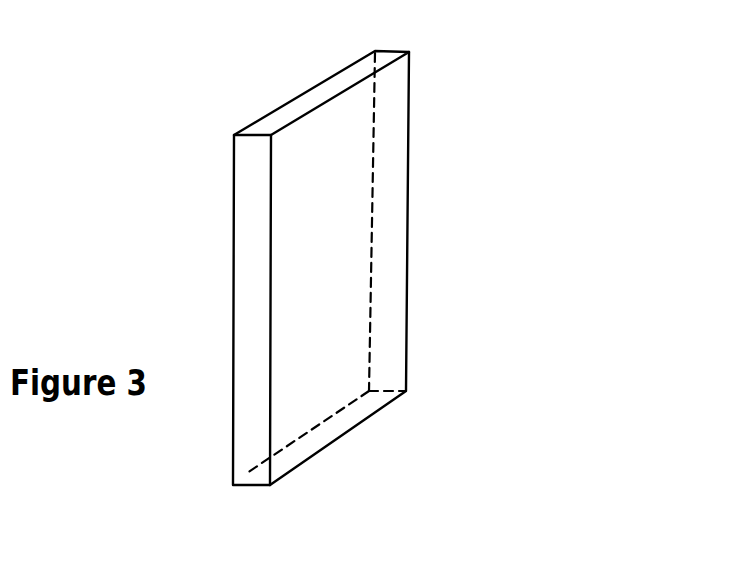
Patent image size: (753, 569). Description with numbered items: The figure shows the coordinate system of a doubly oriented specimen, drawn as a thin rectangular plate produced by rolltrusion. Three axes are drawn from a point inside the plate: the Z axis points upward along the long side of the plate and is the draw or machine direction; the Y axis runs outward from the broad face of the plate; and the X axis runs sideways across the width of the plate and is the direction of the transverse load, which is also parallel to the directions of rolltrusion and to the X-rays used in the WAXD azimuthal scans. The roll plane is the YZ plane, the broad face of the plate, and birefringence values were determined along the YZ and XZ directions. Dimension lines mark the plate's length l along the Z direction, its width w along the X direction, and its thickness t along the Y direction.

The X direction X is at (326, 265).
The Y direction Y is at (326, 265).
The Z direction Z is at (326, 265).
The plate length l is at (405, 392).
The plate width w is at (422, 393).
The plate thickness t is at (233, 490).